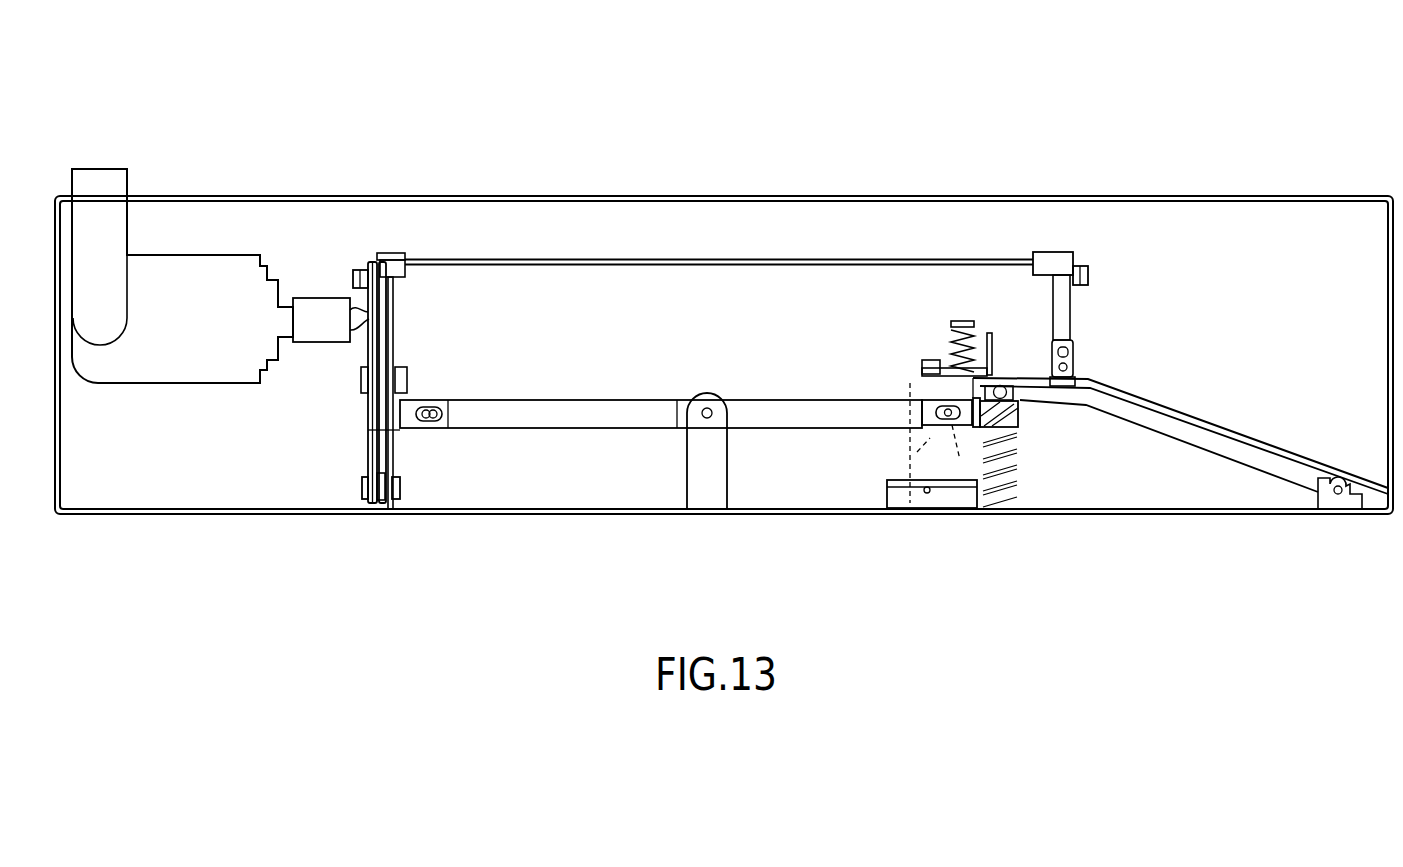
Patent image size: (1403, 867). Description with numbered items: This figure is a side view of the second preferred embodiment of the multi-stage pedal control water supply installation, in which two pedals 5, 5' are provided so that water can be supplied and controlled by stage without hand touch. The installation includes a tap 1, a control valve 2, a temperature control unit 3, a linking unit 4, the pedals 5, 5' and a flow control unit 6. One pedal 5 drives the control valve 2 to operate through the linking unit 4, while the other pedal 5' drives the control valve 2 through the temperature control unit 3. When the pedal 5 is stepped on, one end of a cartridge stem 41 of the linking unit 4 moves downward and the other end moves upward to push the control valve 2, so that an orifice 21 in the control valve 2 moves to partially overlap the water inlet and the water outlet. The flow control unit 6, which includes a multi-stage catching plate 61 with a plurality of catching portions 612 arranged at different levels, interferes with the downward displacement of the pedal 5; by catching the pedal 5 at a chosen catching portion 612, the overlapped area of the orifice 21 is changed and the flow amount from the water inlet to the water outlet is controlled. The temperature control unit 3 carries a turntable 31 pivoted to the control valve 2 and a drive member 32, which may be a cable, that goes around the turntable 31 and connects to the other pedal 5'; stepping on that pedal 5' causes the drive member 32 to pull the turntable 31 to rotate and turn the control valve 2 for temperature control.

The tap 1 is at (155, 267).
The control valve 2 is at (317, 308).
The orifice 21 is at (360, 318).
The temperature control unit 3 is at (417, 301).
The turntable 31 is at (387, 310).
The drive member 32 is at (768, 265).
The linking unit 4 is at (645, 426).
The cartridge stem 41 is at (535, 418).
The flow control unit 6 is at (896, 452).
The multi-stage catching plate 61 is at (917, 452).
The catching portions 612 is at (965, 400).
The pedal 5 is at (1180, 496).
The pedal 5' is at (1340, 493).